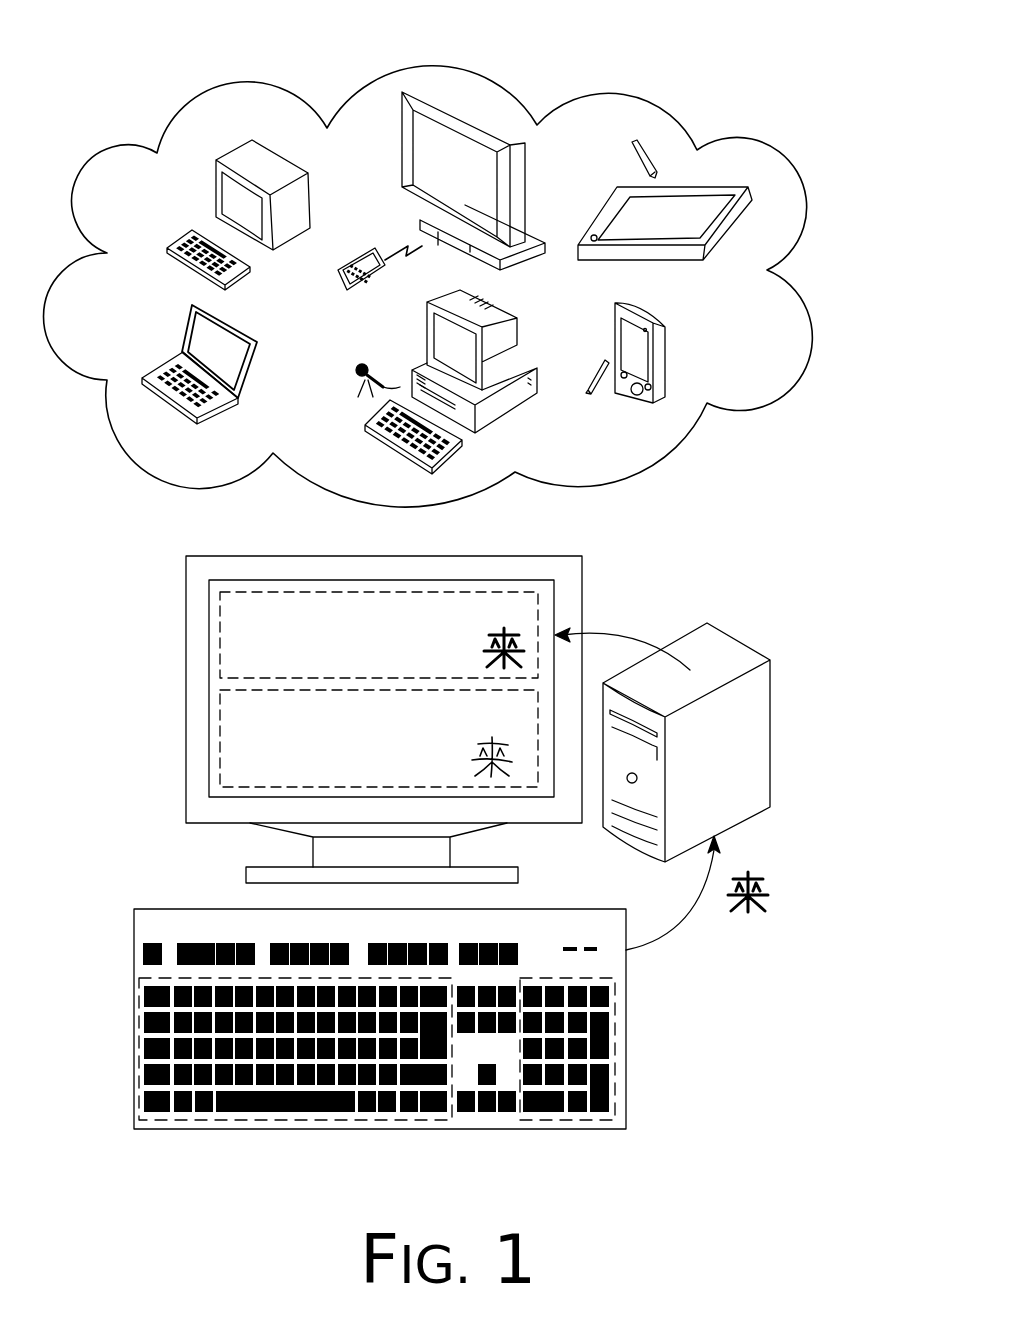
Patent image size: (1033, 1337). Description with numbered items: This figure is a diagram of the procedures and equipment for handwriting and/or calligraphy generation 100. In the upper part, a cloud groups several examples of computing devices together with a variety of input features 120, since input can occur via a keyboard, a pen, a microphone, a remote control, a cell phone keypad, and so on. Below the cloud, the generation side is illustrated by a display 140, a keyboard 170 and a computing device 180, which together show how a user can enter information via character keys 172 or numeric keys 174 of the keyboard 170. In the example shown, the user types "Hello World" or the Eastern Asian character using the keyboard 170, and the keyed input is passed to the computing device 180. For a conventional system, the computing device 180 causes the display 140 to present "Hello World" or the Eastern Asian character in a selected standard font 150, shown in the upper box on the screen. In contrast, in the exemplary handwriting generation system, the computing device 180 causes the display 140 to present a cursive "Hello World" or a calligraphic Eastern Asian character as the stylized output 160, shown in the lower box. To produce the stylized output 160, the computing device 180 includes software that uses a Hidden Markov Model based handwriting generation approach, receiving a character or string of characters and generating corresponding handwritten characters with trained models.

The handwriting and/or calligraphy generation 100 is at (476, 22).
The input features 120 is at (668, 113).
The display 140 is at (402, 703).
The selected standard font 150 is at (379, 635).
The stylized output 160 is at (379, 738).
The keyboard 170 is at (380, 1015).
The character keys 172 is at (218, 1120).
The numeric keys 174 is at (565, 1120).
The computing device 180 is at (730, 637).